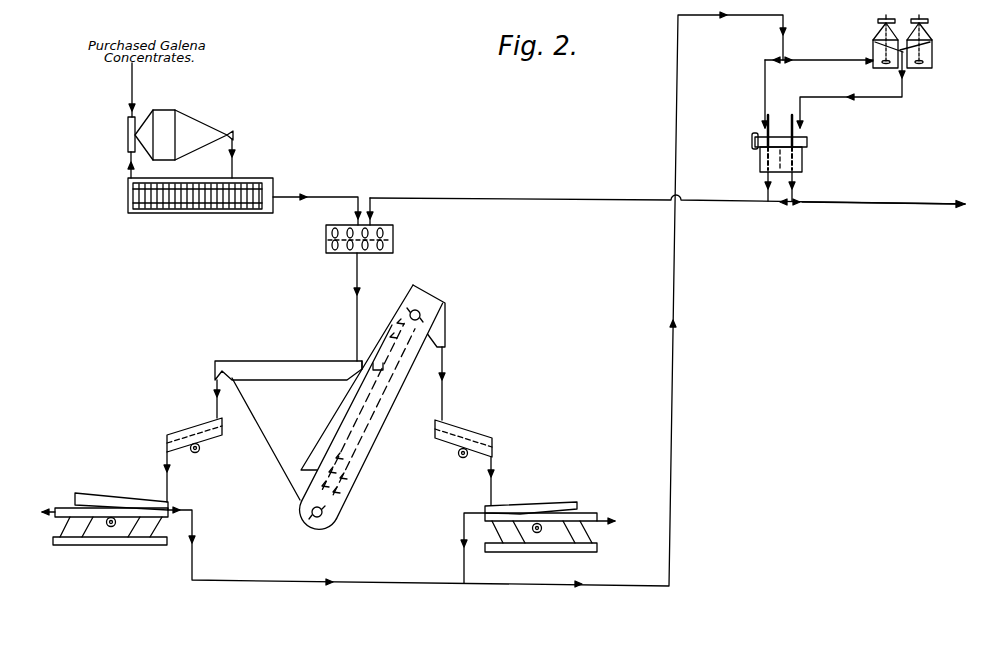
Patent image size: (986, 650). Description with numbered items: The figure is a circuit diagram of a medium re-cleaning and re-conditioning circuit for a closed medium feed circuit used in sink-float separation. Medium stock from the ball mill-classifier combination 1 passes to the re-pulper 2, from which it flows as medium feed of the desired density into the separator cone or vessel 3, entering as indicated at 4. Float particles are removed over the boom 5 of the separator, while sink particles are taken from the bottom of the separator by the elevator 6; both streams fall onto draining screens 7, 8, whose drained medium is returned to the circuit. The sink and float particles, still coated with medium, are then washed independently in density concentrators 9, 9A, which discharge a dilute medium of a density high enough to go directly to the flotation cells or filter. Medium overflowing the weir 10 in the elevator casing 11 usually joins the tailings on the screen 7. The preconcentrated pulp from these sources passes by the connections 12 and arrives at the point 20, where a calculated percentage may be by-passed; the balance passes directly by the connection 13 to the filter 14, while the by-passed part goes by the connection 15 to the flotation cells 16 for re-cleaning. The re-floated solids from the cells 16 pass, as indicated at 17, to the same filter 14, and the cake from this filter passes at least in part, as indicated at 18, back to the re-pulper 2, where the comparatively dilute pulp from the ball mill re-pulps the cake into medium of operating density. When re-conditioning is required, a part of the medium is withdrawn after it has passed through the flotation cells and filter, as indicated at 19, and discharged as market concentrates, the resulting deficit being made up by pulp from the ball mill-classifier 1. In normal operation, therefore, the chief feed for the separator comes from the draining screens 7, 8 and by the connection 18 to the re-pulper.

The ball mill-classifier combination 1 is at (167, 109).
The re-pulper 2 is at (337, 254).
The separator cone 3 is at (265, 458).
The medium feed inlet 4 is at (355, 362).
The boom 5 is at (230, 360).
The elevator 6 is at (354, 452).
The draining screen 7 is at (187, 427).
The draining screen 8 is at (470, 428).
The density concentrator 9 is at (103, 493).
The density concentrator 9A is at (548, 502).
The weir 10 is at (378, 363).
The elevator casing 11 is at (387, 417).
The connections 12 is at (673, 270).
The connection 13 is at (763, 88).
The filter 14 is at (807, 158).
The connection 15 is at (843, 60).
The flotation cells 16 is at (932, 43).
The connection 17 is at (868, 97).
The connection 18 is at (512, 198).
The withdrawal point 19 is at (876, 202).
The by-pass point 20 is at (787, 58).